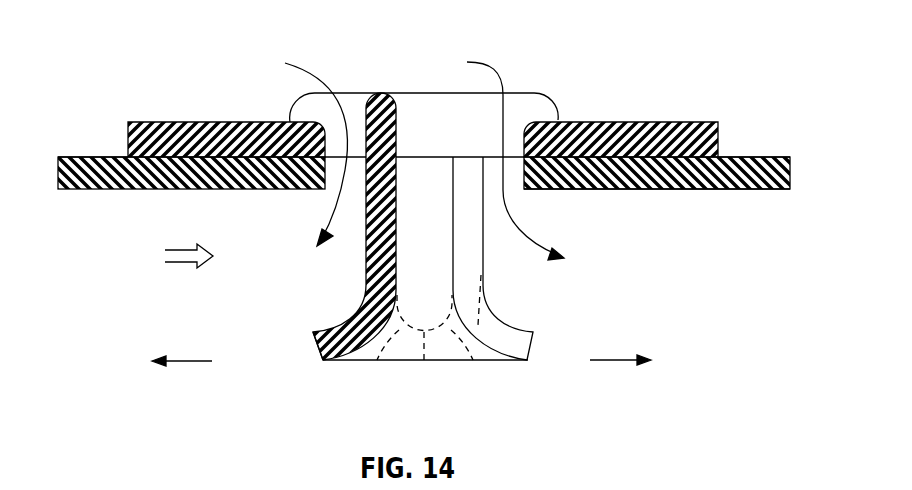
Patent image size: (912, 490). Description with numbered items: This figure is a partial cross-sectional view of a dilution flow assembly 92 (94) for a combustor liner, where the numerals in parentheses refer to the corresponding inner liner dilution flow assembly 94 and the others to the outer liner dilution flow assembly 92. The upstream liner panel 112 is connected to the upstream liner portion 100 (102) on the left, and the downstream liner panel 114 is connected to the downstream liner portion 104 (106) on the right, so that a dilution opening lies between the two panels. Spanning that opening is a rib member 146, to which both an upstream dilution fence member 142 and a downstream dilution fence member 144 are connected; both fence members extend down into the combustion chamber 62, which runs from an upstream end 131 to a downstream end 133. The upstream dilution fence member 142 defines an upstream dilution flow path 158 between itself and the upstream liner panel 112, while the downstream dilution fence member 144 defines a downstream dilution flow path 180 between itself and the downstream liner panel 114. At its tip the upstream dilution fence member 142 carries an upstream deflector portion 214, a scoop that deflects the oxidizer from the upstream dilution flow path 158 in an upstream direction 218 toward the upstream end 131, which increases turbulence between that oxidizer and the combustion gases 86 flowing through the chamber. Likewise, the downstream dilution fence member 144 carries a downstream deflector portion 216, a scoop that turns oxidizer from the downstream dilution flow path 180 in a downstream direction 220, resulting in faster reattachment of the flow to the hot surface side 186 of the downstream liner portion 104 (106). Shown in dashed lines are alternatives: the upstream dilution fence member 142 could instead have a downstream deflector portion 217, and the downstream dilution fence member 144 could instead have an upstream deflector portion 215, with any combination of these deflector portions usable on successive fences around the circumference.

The upstream liner portion 100 is at (175, 138).
The upstream liner portion 102 is at (96, 163).
The upstream liner panel 112 is at (213, 130).
The downstream liner portion 104 is at (696, 153).
The downstream liner portion 106 is at (740, 158).
The downstream liner panel 114 is at (638, 127).
The outer liner dilution flow assembly 92 is at (456, 66).
The inner liner dilution flow assembly 94 is at (436, 87).
The rib member 146 is at (508, 93).
The upstream dilution fence member 142 is at (382, 102).
The downstream dilution fence member 144 is at (477, 180).
The upstream deflector portion 214 is at (320, 360).
The downstream deflector portion 216 is at (500, 328).
The combustion chamber 62 is at (282, 425).
The upstream deflector portion 215 is at (455, 338).
The downstream deflector portion 217 is at (397, 348).
The upstream dilution flow path 158 is at (286, 85).
The downstream dilution flow path 180 is at (527, 237).
The combustion gases 86 is at (183, 250).
The hot surface side 186 is at (698, 191).
The upstream direction 218 is at (195, 363).
The downstream direction 220 is at (613, 361).
The upstream end 131 is at (103, 235).
The downstream end 133 is at (802, 232).